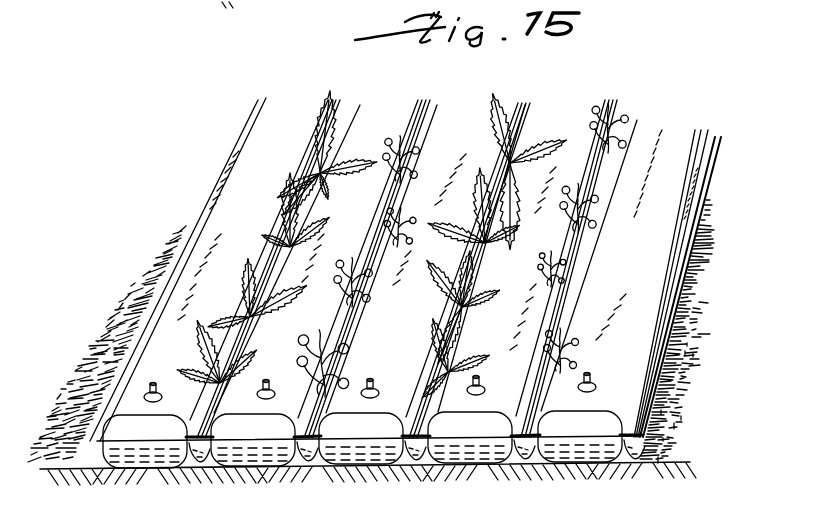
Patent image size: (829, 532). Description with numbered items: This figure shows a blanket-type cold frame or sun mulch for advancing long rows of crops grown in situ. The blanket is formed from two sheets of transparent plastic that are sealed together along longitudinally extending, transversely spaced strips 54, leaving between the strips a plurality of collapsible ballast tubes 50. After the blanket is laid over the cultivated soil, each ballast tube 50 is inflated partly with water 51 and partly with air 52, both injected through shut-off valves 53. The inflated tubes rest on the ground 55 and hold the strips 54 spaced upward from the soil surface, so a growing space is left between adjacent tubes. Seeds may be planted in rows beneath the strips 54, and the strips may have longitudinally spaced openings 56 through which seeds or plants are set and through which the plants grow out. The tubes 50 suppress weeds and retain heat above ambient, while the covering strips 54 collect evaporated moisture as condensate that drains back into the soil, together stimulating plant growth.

The ballast tube 50 is at (640, 272).
The water 51 is at (133, 463).
The air 52 is at (243, 430).
The shut-off valve 53 is at (595, 385).
The sealing strip 54 is at (527, 424).
The ground 55 is at (532, 464).
The opening 56 is at (416, 384).